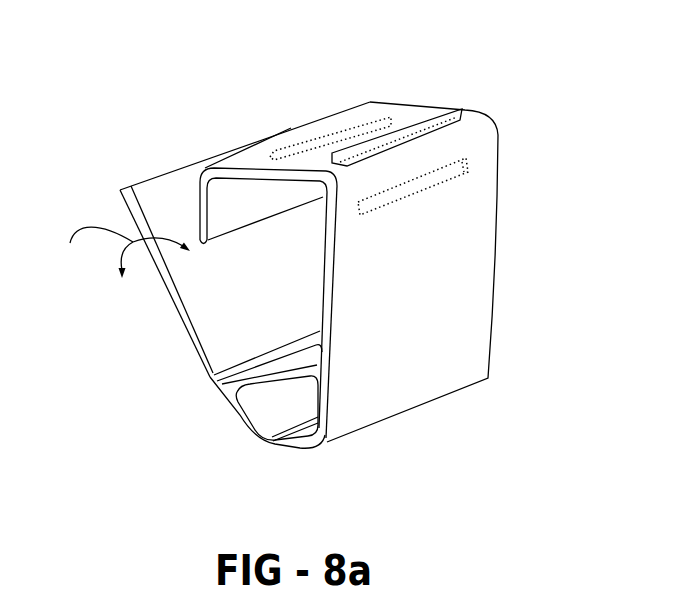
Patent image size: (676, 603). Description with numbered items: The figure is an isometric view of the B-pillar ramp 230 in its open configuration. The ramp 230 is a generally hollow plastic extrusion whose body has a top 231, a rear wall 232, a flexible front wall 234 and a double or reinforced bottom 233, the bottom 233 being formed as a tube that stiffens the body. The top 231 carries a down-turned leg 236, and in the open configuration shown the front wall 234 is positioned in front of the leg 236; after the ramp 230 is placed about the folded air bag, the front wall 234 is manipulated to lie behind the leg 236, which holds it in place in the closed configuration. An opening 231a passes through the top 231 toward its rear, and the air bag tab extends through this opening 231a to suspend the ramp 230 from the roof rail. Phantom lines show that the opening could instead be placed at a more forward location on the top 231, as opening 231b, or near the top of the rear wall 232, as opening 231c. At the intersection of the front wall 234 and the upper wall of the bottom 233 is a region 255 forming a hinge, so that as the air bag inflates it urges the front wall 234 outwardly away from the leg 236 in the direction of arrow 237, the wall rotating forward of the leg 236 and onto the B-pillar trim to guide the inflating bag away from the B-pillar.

The ramp 230 is at (406, 97).
The top 231 is at (465, 110).
The opening 231a is at (433, 120).
The opening 231b is at (304, 150).
The opening 231c is at (467, 159).
The rear wall 232 is at (324, 303).
The bottom 233 is at (236, 426).
The front wall 234 is at (237, 296).
The down-turned leg 236 is at (205, 193).
The arrow 237 is at (116, 253).
The region 255 is at (210, 373).